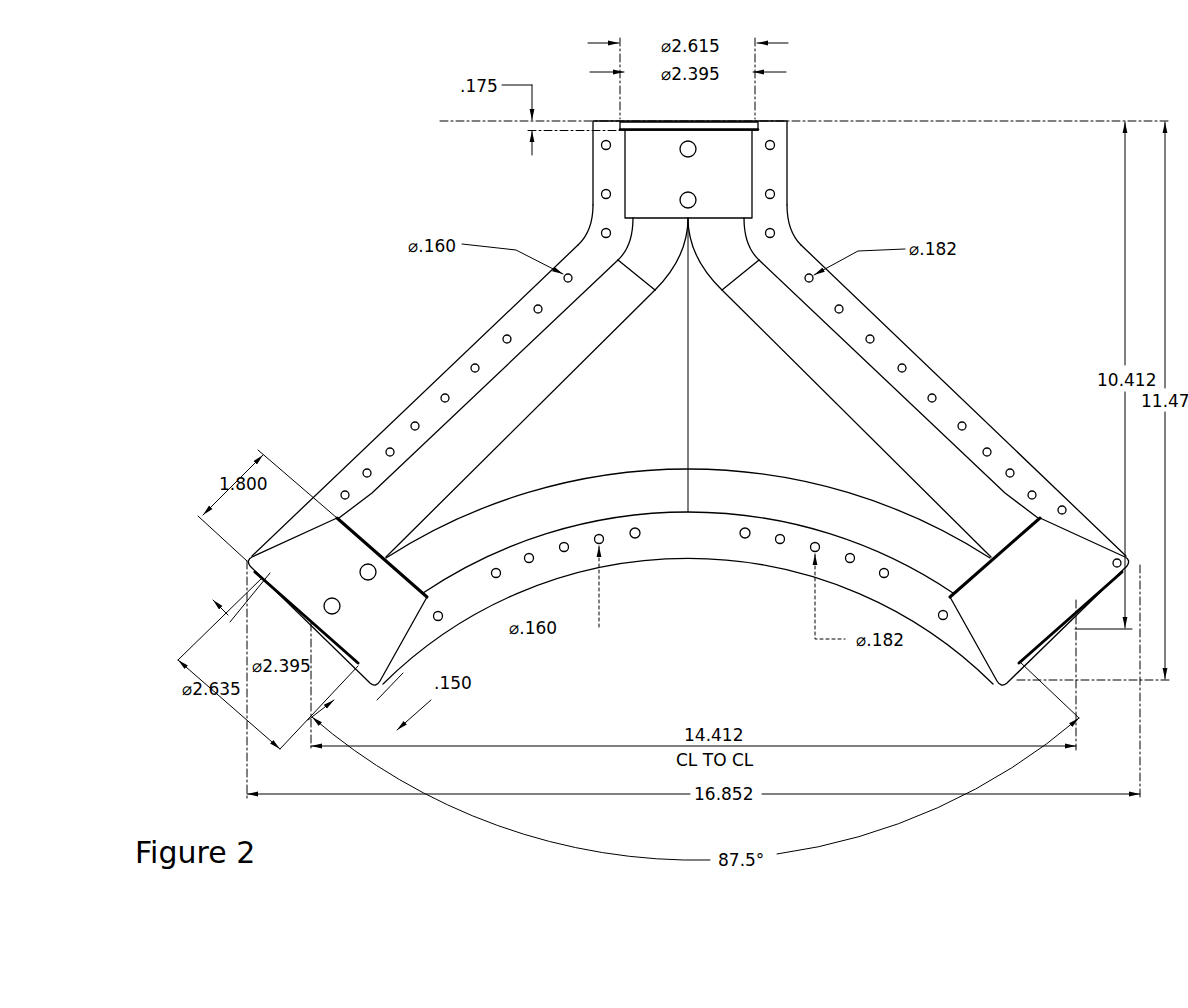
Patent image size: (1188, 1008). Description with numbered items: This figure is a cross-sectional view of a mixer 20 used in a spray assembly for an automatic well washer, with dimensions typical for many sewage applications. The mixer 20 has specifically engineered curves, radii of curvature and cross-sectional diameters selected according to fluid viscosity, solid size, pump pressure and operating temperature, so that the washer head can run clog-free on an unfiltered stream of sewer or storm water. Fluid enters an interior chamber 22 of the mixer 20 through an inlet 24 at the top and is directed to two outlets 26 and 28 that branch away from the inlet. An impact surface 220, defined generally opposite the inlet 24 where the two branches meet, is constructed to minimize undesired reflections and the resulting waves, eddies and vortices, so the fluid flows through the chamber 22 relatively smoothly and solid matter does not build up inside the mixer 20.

The mixer 20 is at (321, 207).
The interior chamber 22 is at (635, 415).
The inlet 24 is at (731, 139).
The outlet 26 is at (312, 586).
The outlet 28 is at (1066, 589).
The impact surface 220 is at (708, 501).